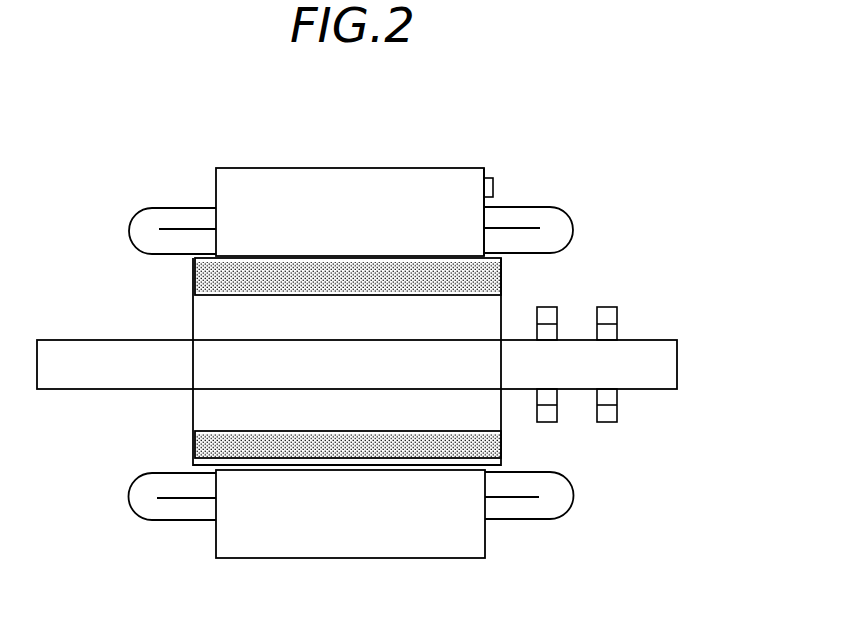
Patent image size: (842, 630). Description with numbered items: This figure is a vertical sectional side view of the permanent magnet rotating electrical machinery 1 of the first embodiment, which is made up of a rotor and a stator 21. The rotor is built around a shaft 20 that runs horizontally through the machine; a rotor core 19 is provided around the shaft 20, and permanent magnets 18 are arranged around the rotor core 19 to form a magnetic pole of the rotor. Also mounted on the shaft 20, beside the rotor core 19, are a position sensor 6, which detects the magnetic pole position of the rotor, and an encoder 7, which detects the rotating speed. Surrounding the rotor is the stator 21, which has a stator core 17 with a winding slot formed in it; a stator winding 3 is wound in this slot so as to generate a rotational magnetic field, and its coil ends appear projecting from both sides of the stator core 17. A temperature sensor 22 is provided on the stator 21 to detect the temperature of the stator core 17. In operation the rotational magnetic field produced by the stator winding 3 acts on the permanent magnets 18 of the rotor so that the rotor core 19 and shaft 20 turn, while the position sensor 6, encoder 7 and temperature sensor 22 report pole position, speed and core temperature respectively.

The permanent magnet rotating electrical machinery 1 is at (393, 157).
The stator winding 3 is at (552, 222).
The position sensor 6 is at (547, 315).
The encoder 7 is at (603, 315).
The stator core 17 is at (472, 177).
The permanent magnets 18 is at (293, 275).
The rotor core 19 is at (208, 322).
The shaft 20 is at (667, 360).
The stator 21 is at (198, 200).
The temperature sensor 22 is at (493, 187).